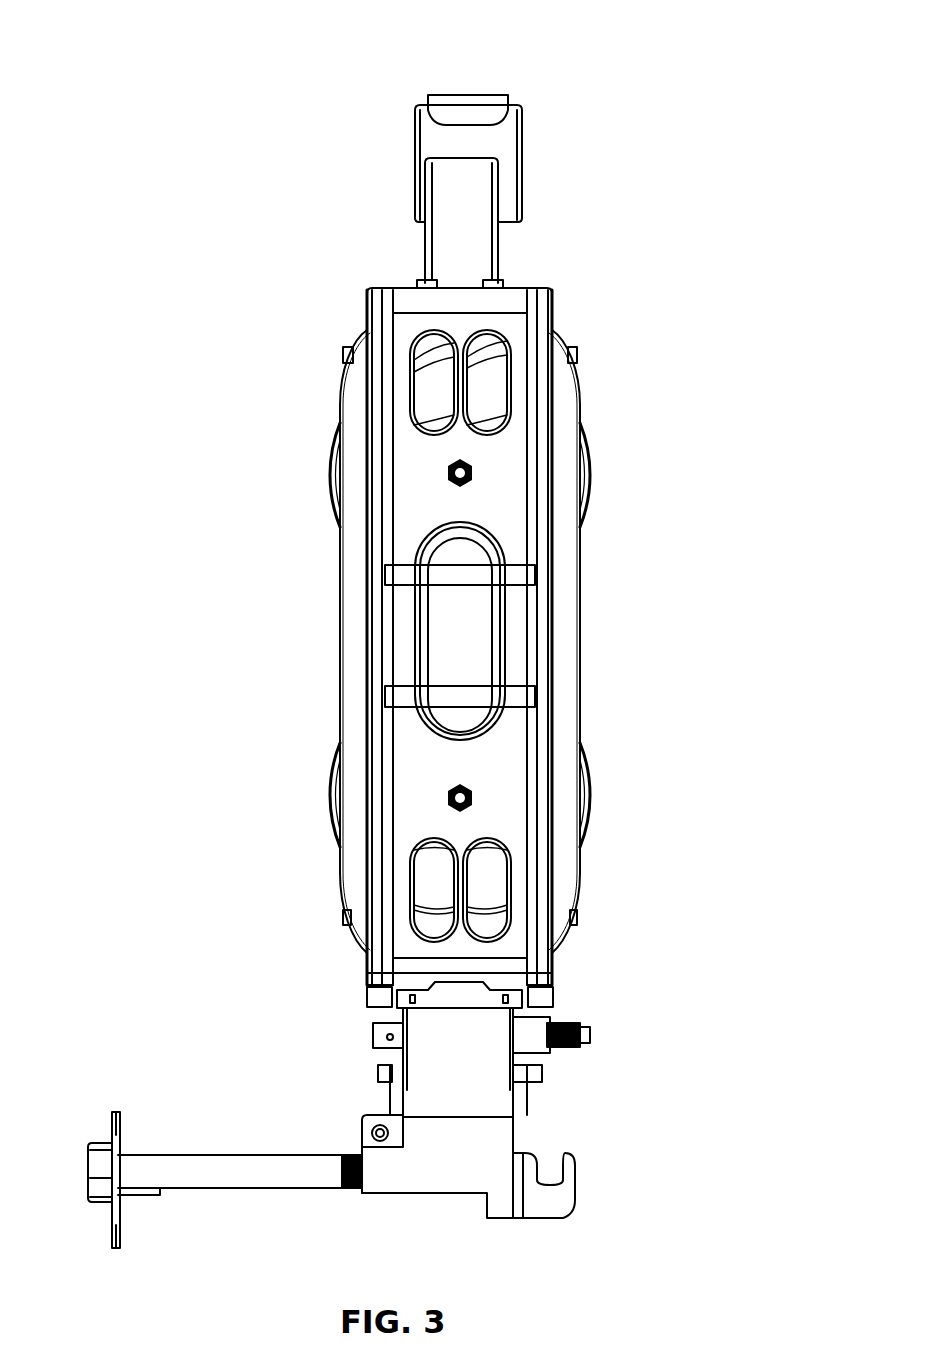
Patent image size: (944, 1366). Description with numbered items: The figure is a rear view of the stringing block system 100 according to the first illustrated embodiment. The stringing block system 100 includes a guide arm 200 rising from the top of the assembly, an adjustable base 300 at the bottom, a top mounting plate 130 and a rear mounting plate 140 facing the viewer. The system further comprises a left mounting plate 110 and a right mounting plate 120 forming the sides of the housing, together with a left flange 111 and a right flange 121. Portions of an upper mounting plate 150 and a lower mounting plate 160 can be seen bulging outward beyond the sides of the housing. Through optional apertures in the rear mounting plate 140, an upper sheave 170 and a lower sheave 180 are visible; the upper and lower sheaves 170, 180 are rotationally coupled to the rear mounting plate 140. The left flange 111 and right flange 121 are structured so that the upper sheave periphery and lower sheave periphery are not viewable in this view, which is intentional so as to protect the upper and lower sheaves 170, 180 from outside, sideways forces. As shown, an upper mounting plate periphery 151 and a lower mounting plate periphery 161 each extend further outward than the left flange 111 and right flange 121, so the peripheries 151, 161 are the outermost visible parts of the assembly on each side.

The stringing block system 100 is at (128, 38).
The left mounting plate 110 is at (577, 666).
The left flange 111 is at (582, 590).
The right mounting plate 120 is at (365, 657).
The right flange 121 is at (340, 570).
The top mounting plate 130 is at (402, 284).
The rear mounting plate 140 is at (482, 651).
The upper mounting plate 150 is at (337, 442).
The upper mounting plate periphery 151 is at (333, 478).
The lower mounting plate 160 is at (336, 768).
The lower mounting plate periphery 161 is at (333, 799).
The upper sheave 170 is at (480, 413).
The lower sheave 180 is at (438, 853).
The guide arm 200 is at (498, 256).
The adjustable base 300 is at (360, 1049).